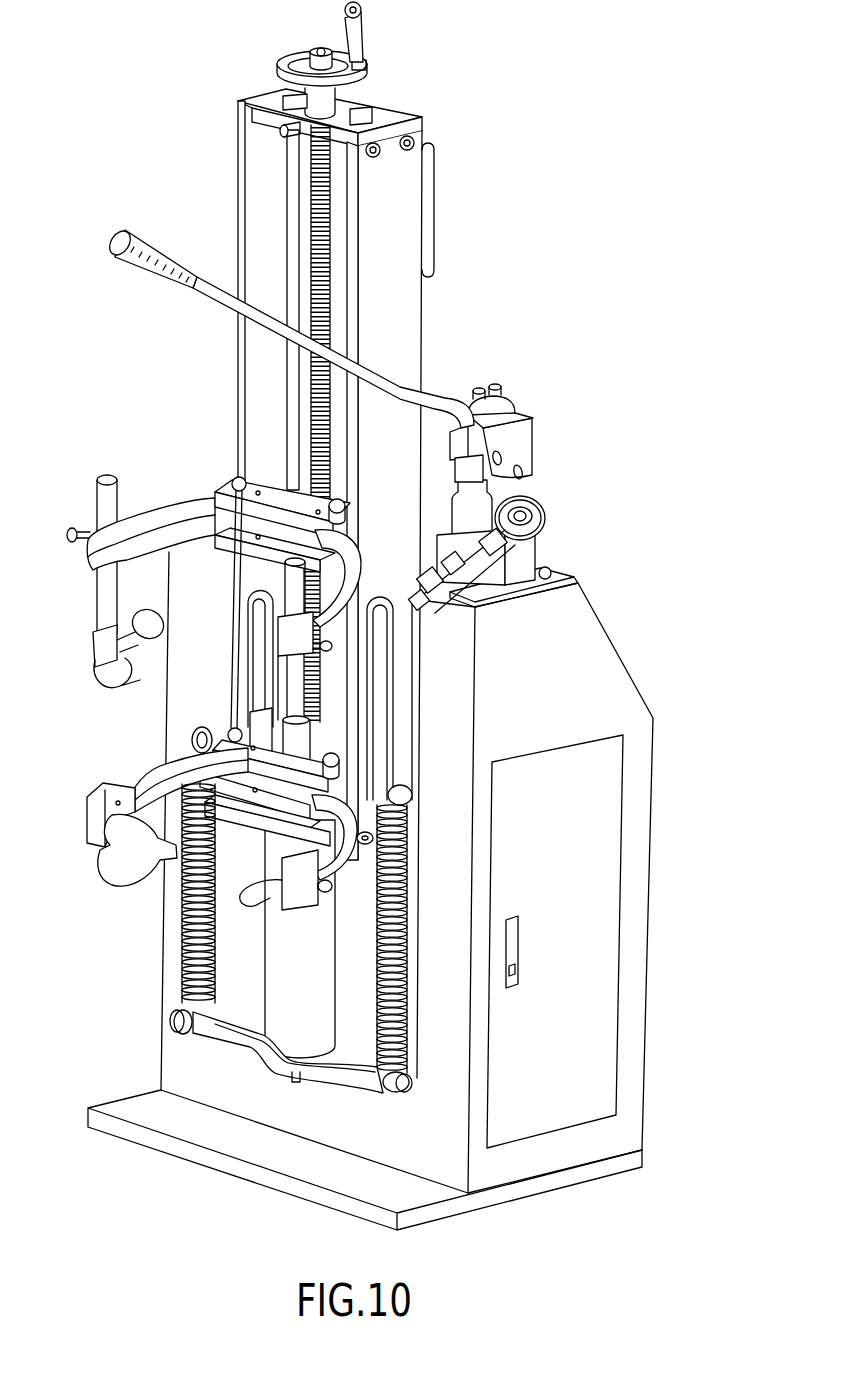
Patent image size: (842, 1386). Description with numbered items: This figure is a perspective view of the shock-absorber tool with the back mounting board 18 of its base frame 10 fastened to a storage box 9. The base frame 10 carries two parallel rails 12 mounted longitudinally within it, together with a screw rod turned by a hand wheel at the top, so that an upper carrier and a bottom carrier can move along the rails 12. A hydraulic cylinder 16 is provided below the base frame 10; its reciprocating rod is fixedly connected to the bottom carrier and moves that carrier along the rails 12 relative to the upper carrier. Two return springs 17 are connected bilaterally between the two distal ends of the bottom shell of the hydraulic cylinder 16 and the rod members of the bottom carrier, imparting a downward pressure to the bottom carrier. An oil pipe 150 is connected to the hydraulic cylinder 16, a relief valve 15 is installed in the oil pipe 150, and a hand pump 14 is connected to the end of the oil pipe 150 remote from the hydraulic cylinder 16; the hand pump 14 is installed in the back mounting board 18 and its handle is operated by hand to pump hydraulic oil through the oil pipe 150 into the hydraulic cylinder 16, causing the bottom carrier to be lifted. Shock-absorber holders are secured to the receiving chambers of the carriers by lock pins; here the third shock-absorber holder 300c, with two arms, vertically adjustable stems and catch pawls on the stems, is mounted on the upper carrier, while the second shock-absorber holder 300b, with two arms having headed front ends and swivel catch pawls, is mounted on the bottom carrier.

The storage box 9 is at (596, 634).
The base frame 10 is at (410, 305).
The rails 12 is at (287, 225).
The hand pump 14 is at (528, 448).
The relief valve 15 is at (487, 566).
The hydraulic cylinder 16 is at (283, 972).
The return springs 17 is at (183, 927).
The back mounting board 18 is at (582, 583).
The oil pipe 150 is at (414, 708).
The second shock-absorber holder 300b is at (118, 774).
The third shock-absorber holder 300c is at (181, 482).